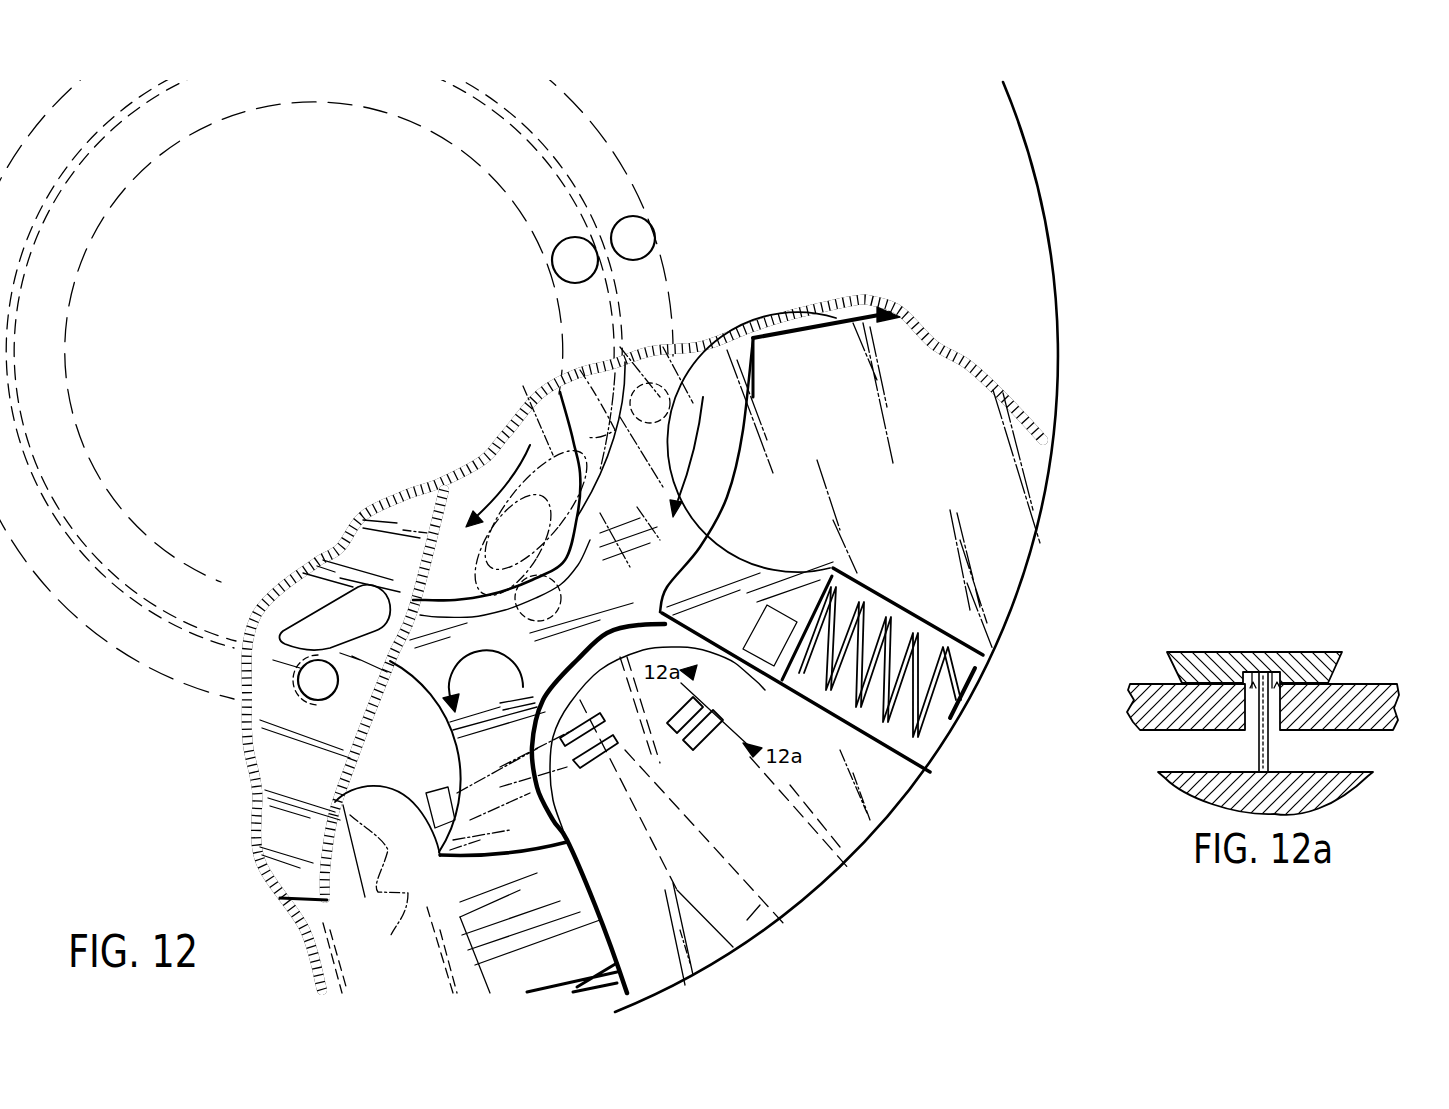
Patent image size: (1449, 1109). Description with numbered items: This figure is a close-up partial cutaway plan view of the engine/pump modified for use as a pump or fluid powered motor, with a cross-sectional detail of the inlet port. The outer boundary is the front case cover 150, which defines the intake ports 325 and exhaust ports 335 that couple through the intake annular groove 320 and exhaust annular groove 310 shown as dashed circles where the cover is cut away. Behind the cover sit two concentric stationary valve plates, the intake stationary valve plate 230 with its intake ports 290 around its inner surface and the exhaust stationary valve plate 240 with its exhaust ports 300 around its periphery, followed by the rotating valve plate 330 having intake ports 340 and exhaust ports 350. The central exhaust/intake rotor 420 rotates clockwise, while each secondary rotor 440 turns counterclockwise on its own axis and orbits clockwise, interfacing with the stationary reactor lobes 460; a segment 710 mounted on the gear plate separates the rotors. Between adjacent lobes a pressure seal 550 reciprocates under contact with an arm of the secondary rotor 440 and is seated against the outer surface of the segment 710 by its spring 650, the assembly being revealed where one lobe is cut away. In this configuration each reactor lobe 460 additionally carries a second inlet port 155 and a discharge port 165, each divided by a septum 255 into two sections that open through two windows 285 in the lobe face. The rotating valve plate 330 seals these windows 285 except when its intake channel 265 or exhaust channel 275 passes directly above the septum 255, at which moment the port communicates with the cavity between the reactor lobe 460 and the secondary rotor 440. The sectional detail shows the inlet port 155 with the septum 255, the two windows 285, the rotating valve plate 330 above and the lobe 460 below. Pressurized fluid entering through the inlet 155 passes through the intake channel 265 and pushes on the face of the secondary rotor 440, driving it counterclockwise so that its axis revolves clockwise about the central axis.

In FIG. 12, the front case cover 150 is at (1010, 156).
In FIG. 12, the inlet port 155 is at (840, 868).
In FIG. 12A, the inlet port 155 is at (1312, 763).
In FIG. 12, the discharge port 165 is at (747, 920).
In FIG. 12, the intake stationary valve plate 230 is at (278, 815).
In FIG. 12, the exhaust stationary valve plate 240 is at (357, 547).
In FIG. 12, the septum 255 is at (590, 760).
In FIG. 12A, the septum 255 is at (1258, 732).
In FIG. 12, the intake channel 265 is at (797, 622).
In FIG. 12A, the intake channel 265 is at (1264, 672).
In FIG. 12, the exhaust channel 275 is at (447, 783).
In FIG. 12, the windows 285 is at (583, 720).
In FIG. 12A, the windows 285 is at (1253, 687).
In FIG. 12, the intake ports 290 is at (343, 690).
In FIG. 12, the exhaust ports 300 is at (320, 620).
In FIG. 12, the exhaust annular groove 310 is at (517, 186).
In FIG. 12, the intake annular groove 320 is at (632, 183).
In FIG. 12, the intake ports 325 is at (640, 230).
In FIG. 12, the rotating valve plate 330 is at (390, 937).
In FIG. 12A, the rotating valve plate 330 is at (1333, 668).
In FIG. 12, the exhaust ports 335 is at (565, 262).
In FIG. 12, the intake ports 340 is at (290, 676).
In FIG. 12, the exhaust ports 350 is at (530, 407).
In FIG. 12, the exhaust/intake rotor 420 is at (500, 473).
In FIG. 12, the secondary rotor 440 is at (507, 688).
In FIG. 12, the reactor lobe 460 is at (955, 418).
In FIG. 12A, the reactor lobe 460 is at (1347, 773).
In FIG. 12, the pressure seal 550 is at (803, 322).
In FIG. 12, the spring 650 is at (957, 733).
In FIG. 12, the segment 710 is at (713, 340).